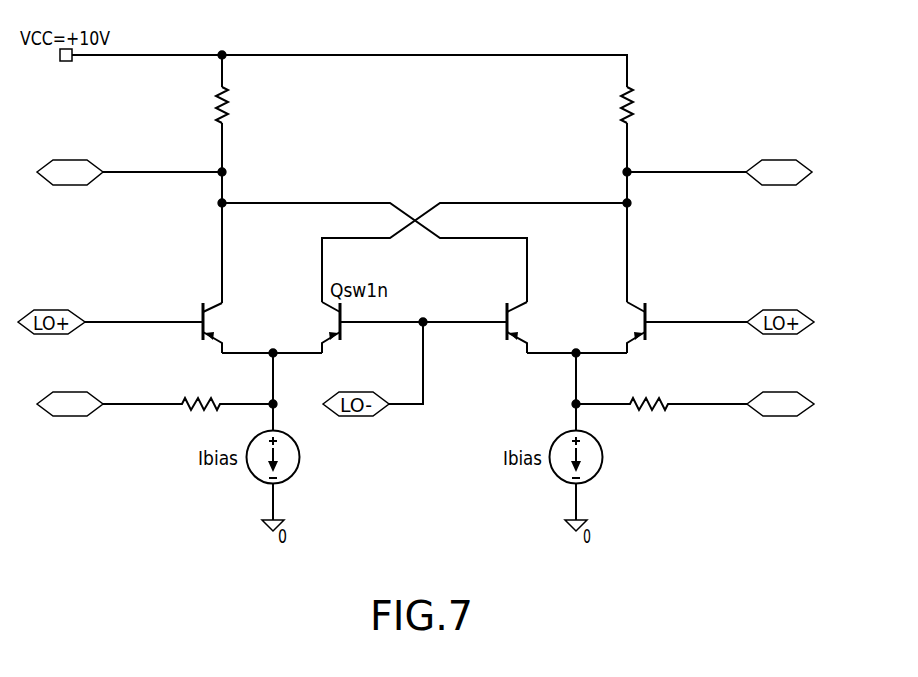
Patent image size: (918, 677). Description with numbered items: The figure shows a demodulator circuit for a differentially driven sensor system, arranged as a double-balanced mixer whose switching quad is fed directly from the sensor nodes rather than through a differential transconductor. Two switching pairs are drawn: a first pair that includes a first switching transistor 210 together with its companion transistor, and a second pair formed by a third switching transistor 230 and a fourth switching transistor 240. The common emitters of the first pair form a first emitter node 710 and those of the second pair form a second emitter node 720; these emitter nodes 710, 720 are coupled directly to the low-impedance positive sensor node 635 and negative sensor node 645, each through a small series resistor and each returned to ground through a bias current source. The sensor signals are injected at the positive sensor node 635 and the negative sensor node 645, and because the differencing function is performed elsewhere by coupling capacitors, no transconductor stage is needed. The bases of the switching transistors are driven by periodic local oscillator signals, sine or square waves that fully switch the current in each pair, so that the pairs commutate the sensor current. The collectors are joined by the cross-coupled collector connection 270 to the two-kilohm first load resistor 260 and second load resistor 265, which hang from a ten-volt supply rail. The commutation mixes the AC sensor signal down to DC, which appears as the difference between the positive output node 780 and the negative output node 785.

The switching transistor Qsw1p 210 is at (225, 316).
The switching transistor Qsw2p 230 is at (533, 316).
The switching transistor Qsw2n 240 is at (668, 340).
The load resistor Rcp 260 is at (233, 99).
The load resistor Rcn 265 is at (640, 107).
The cross-coupled collector connection 270 is at (437, 277).
The RF+ node 635 is at (94, 418).
The RF− node 645 is at (757, 417).
The emitter node of first switching pair 710 is at (300, 381).
The emitter node of second switching pair 720 is at (548, 378).
The IF+ node 780 is at (94, 186).
The IF− node 785 is at (765, 160).